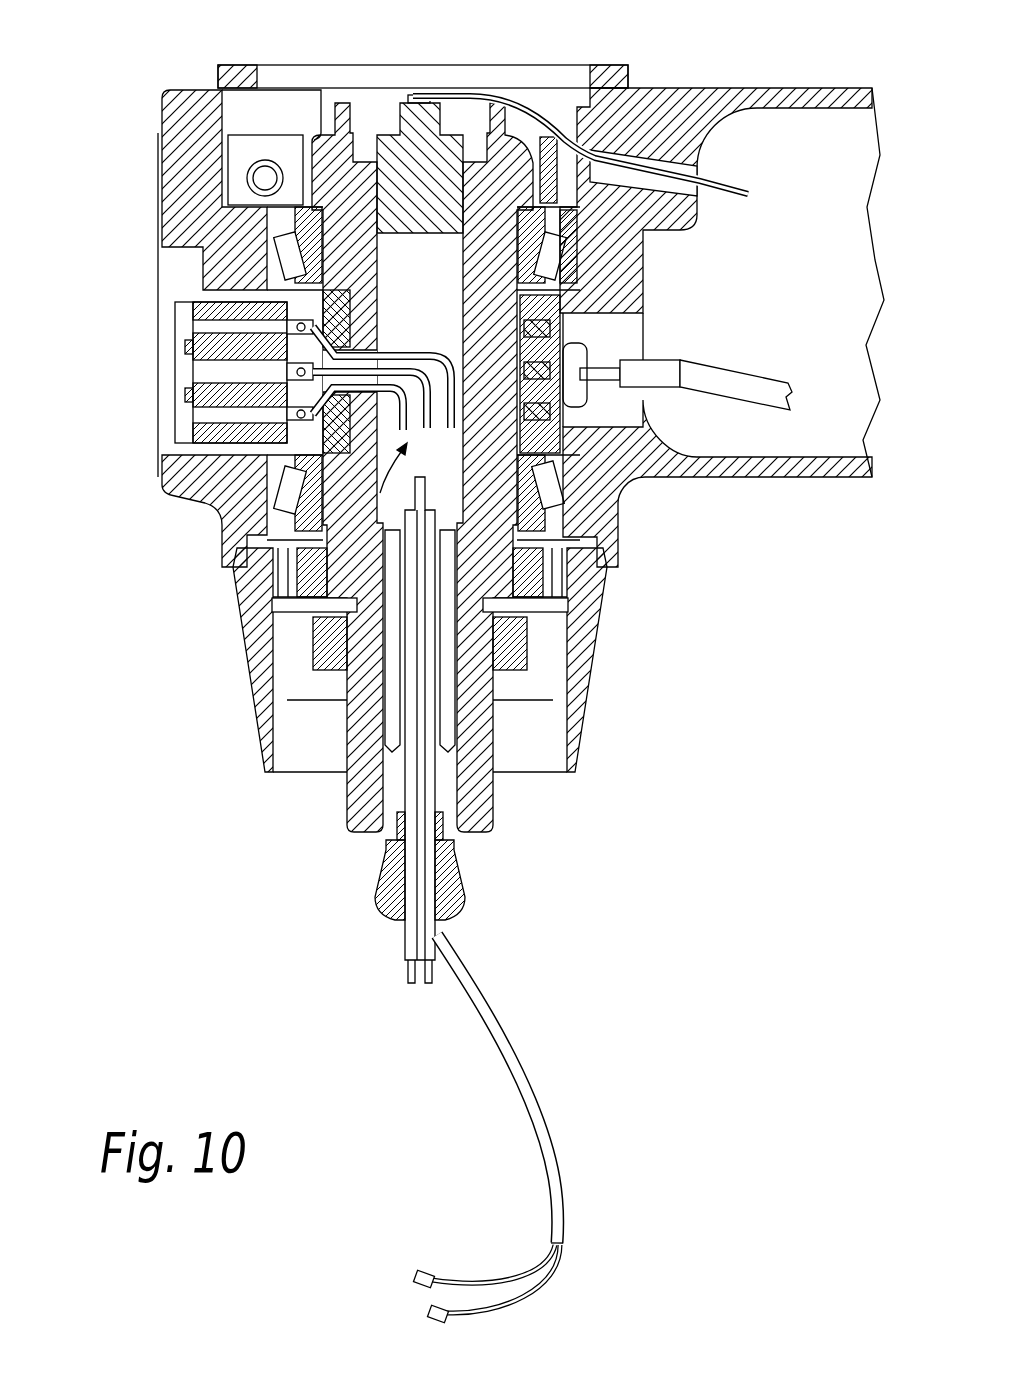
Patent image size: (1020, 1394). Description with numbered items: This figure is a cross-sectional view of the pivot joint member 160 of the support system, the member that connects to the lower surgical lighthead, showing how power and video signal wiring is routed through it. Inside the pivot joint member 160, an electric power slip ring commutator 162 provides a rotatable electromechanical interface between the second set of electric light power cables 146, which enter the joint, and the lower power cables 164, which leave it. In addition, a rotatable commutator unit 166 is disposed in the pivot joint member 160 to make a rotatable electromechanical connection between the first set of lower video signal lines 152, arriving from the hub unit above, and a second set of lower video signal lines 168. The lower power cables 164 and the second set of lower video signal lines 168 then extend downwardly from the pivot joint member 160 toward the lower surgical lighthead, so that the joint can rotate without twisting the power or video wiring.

The second set of electric light power cables 146 is at (735, 385).
The lower video signal lines 152 is at (745, 185).
The pivot joint member 160 is at (112, 425).
The electric power slip ring commutator 162 is at (185, 342).
The lower power cables 164 is at (327, 547).
The rotatable commutator unit 166 is at (382, 130).
The second set of lower video signal lines 168 is at (530, 1092).